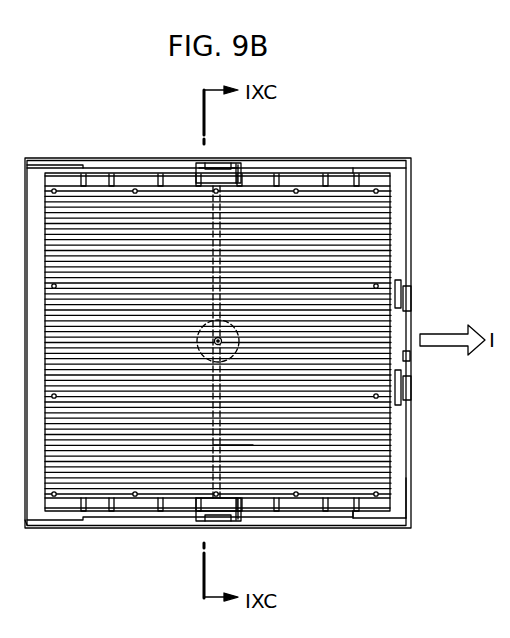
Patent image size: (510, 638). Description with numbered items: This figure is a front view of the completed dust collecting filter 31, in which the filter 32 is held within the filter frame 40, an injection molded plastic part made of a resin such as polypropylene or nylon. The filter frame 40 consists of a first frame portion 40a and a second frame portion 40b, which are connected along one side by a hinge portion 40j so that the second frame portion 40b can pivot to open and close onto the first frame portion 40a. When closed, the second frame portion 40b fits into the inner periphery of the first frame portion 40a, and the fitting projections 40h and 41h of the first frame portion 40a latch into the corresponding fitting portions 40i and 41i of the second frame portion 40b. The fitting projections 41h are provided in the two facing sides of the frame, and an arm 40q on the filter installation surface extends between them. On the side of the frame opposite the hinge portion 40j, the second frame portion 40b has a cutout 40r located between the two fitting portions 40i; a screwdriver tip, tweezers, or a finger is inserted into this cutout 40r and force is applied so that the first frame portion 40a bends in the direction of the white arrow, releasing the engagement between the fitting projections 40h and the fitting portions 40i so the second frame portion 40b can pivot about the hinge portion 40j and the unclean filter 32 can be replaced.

The dust collecting filter 31 is at (63, 147).
The filter frame 40 is at (368, 131).
The filter 32 is at (383, 193).
The fitting projection 41h is at (208, 157).
The fitting portion 41i is at (229, 160).
The fitting portion 40i is at (393, 272).
The fitting projection 40h is at (400, 290).
The arm 40q is at (225, 437).
The cutout 40r is at (400, 346).
The first frame portion 40a is at (405, 492).
The second frame portion 40b is at (362, 510).
The hinge portion 40j is at (17, 517).